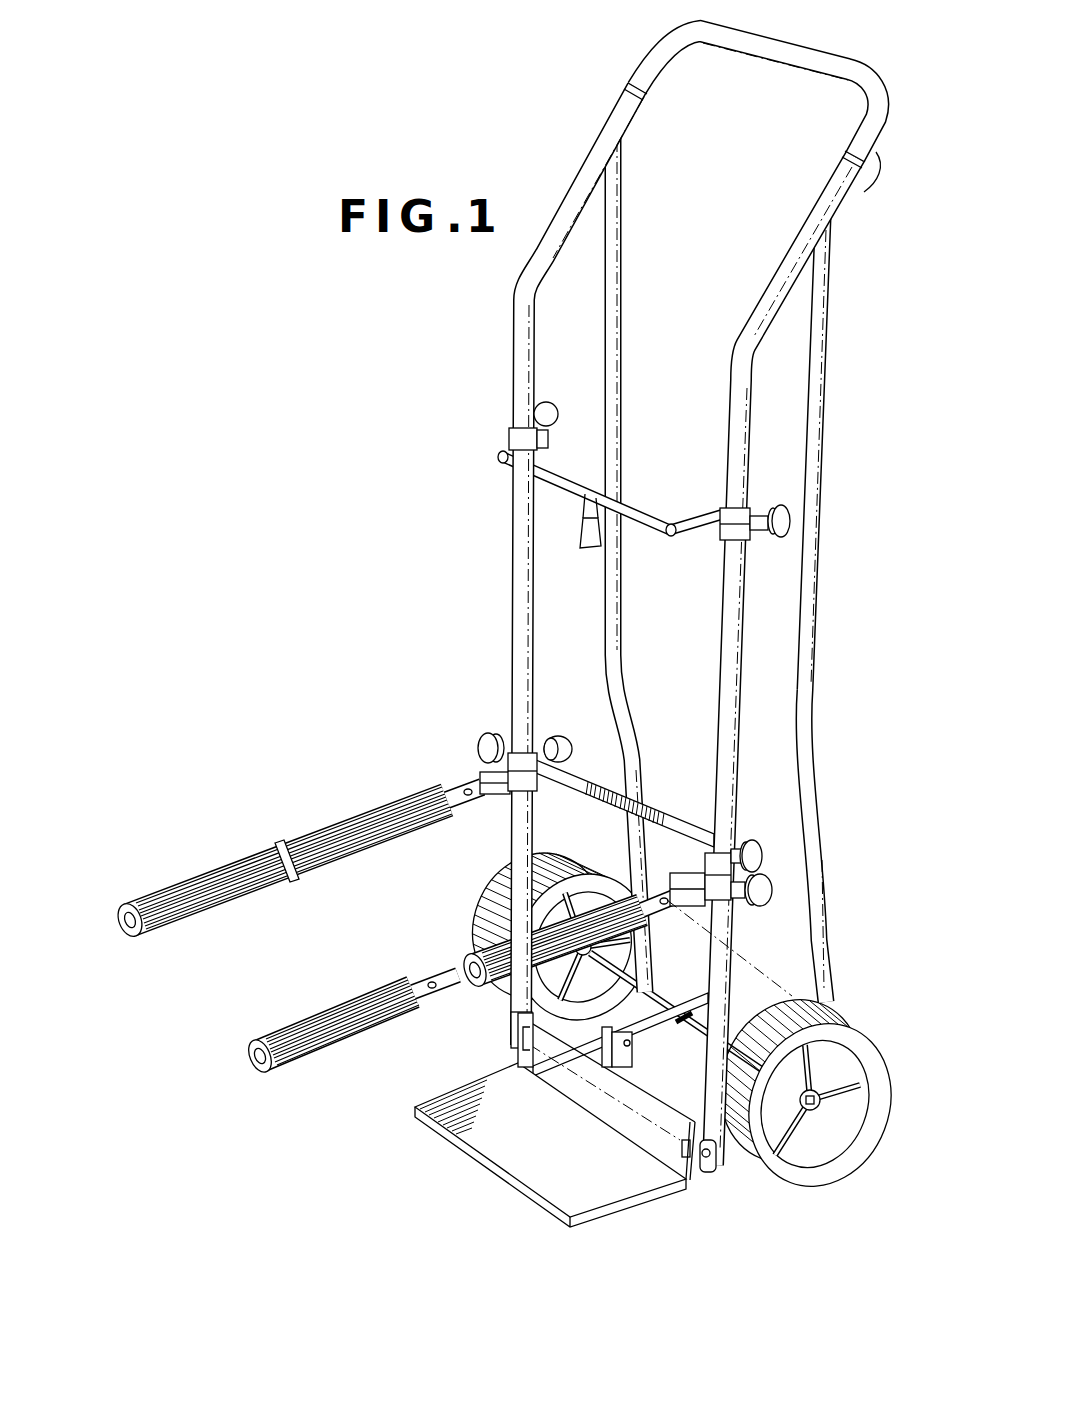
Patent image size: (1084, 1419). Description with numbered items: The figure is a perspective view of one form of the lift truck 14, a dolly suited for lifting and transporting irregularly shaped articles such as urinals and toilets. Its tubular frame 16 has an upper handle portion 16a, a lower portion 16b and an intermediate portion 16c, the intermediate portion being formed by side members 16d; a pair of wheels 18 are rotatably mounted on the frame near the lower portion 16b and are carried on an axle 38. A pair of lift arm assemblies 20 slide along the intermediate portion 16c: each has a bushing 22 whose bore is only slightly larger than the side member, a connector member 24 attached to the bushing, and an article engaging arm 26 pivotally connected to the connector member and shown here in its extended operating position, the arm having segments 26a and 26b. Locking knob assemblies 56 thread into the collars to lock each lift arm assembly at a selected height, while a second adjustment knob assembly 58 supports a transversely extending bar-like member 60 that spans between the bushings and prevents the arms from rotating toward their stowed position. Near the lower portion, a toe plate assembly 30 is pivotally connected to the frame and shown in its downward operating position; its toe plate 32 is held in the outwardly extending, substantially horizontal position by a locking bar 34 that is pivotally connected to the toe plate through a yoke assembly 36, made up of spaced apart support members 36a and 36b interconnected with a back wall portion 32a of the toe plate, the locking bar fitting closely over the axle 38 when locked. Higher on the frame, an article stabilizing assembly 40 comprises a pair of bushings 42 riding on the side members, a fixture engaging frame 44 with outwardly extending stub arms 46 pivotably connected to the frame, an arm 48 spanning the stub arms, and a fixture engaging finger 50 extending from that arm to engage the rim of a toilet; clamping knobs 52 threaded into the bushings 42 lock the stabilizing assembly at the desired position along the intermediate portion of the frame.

The lift truck 14 is at (553, 130).
The tubular frame 16 is at (505, 331).
The upper handle portion 16a is at (800, 45).
The lower portion 16b is at (514, 1030).
The intermediate portion 16c is at (522, 508).
The side members 16d is at (754, 407).
The wheels 18 is at (483, 905).
The lift arm assemblies 20 is at (297, 800).
The bushing 22 is at (533, 752).
The connector member 24 is at (500, 790).
The article engaging arm 26 is at (282, 840).
The inner handle section 26a is at (366, 815).
The outer handle grip section 26b is at (155, 888).
The toe plate assembly 30 is at (483, 1160).
The toe plate 32 is at (552, 1180).
The back wall portion 32a is at (660, 1150).
The locking bar 34 is at (650, 1020).
The yoke assembly 36 is at (607, 1062).
The support member 36a is at (625, 1075).
The support member 36b is at (603, 1065).
The axle 38 is at (688, 1025).
The article stabilizing assembly 40 is at (645, 540).
The bushings 42 is at (512, 436).
The fixture engaging frame 44 is at (572, 478).
The stub arms 46 is at (497, 456).
The arm 48 is at (636, 500).
The fixture engaging finger 50 is at (590, 548).
The clamping knobs 52 is at (548, 402).
The locking knob assemblies 56 is at (485, 745).
The second adjustment knob assembly 58 is at (575, 745).
The bar-like member 60 is at (606, 818).